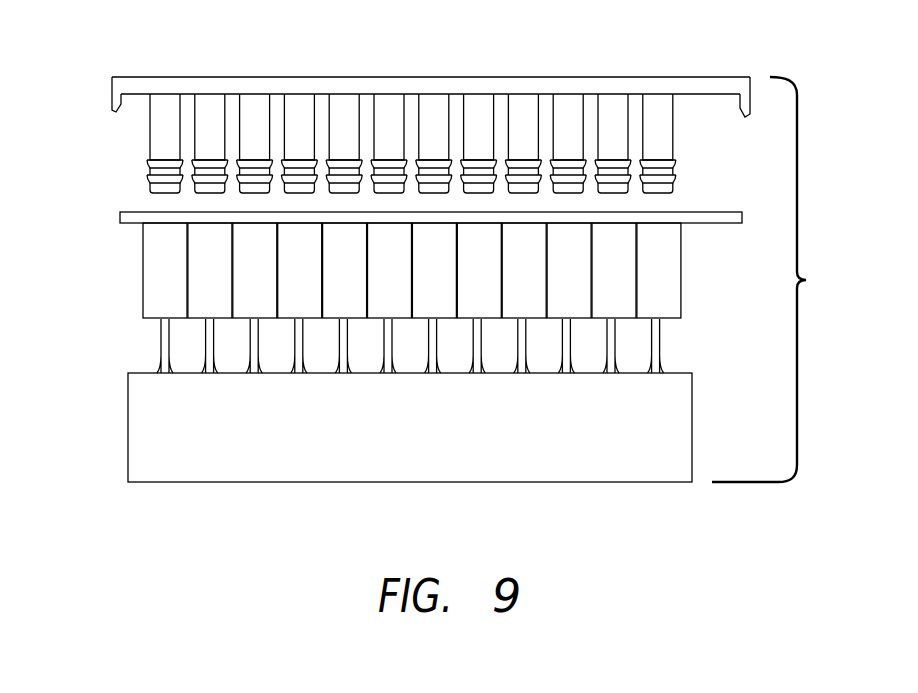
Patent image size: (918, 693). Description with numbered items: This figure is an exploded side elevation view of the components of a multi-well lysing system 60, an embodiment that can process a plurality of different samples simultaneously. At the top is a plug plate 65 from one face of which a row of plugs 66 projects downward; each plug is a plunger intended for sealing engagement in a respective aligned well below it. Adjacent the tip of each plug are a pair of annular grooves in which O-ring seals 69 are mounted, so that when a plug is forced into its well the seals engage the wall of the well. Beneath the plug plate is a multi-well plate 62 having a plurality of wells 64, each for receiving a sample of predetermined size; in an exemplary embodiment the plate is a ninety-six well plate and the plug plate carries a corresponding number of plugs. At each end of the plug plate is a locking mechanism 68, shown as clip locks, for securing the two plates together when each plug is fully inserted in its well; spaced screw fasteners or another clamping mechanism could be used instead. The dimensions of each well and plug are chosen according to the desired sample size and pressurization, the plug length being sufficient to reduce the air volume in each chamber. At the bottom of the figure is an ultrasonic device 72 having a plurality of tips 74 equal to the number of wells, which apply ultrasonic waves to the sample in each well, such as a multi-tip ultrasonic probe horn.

The lysing system 60 is at (777, 279).
The multi-well plate 62 is at (120, 210).
The wells 64 is at (199, 289).
The plug plate 65 is at (430, 76).
The plugs 66 is at (198, 137).
The locking mechanism 68 is at (113, 111).
The O-ring seals 69 is at (148, 180).
The ultrasonic device 72 is at (128, 437).
The tips 74 is at (205, 338).